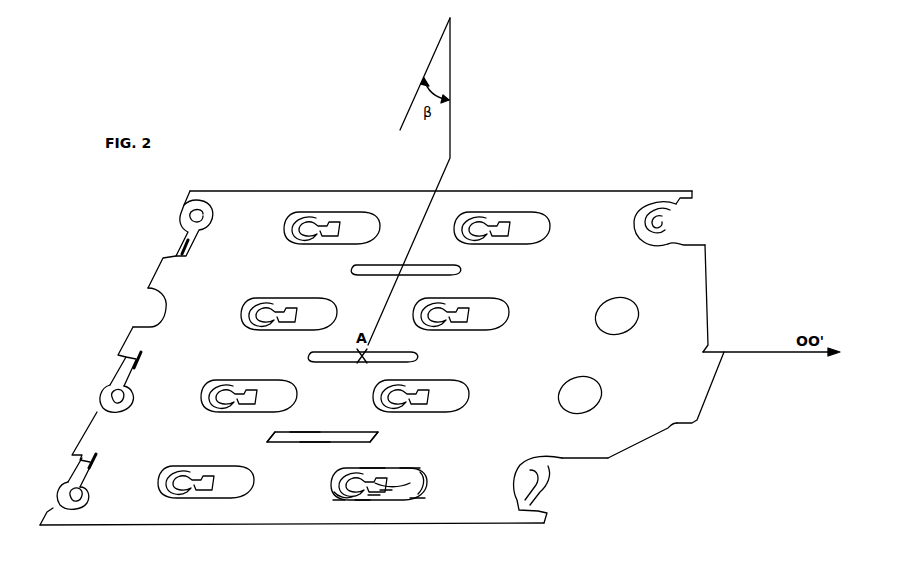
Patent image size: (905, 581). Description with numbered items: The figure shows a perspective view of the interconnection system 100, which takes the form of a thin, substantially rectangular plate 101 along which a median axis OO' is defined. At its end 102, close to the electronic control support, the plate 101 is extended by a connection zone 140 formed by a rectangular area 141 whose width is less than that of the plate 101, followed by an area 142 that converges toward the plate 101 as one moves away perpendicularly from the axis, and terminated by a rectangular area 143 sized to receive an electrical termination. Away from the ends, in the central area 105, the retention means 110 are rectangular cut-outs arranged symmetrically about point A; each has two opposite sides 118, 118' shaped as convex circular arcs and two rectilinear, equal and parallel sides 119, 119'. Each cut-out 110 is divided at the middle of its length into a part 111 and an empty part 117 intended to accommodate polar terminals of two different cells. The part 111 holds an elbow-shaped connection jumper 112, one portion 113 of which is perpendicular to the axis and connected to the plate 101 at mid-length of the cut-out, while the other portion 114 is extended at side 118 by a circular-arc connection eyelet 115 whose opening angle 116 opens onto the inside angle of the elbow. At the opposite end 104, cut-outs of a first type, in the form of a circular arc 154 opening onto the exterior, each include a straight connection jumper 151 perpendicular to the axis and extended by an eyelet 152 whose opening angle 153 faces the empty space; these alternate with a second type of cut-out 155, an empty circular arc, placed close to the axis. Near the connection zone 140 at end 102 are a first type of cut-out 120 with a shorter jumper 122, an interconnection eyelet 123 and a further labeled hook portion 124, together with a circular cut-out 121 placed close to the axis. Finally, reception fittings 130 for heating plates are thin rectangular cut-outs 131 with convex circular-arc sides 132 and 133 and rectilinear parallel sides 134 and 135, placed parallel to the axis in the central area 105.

The interconnection system 100 is at (247, 188).
The thin plate 101 is at (268, 207).
The end close to the electronic control support 102 is at (546, 520).
The opposite end 104 is at (152, 282).
The central area 105 is at (401, 318).
The retention means 110 is at (520, 212).
The part of cut-out including connection jumper 111 is at (348, 478).
The connection jumper 112 is at (385, 490).
The portion of jumper perpendicular to median axis 113 is at (405, 483).
The other portion of jumper 114 is at (373, 495).
The connection eyelet 115 is at (335, 500).
The opening angle 116 is at (368, 468).
The empty part of cut-out 117 is at (420, 500).
The convex circular-arc side 118 is at (318, 498).
The convex circular-arc side 118' is at (450, 464).
The rectilinear side 119 is at (350, 528).
The rectilinear side 119' is at (449, 426).
The first type of cut-out 120 is at (684, 222).
The circular cut-out 121 is at (619, 314).
The jumper 122 is at (698, 208).
The interconnection eyelet 123 is at (684, 253).
The hook portion 124 is at (638, 228).
The reception fittings 130 is at (100, 381).
The thin rectangular cut-out 131 is at (324, 432).
The convex circular-arc side 132 is at (380, 439).
The convex circular-arc side 133 is at (268, 437).
The slot upper edge 134 is at (300, 432).
The rectilinear side 135 is at (289, 444).
The connection zone 140 is at (698, 308).
The rectangular area 141 is at (588, 462).
The converging area 142 is at (652, 440).
The rectangular area 143 is at (716, 397).
The straight connection jumper 151 is at (116, 365).
The eyelet 152 is at (102, 393).
The opening angle 153 is at (128, 402).
The circular arc 154 is at (134, 394).
The second type of cut-out 155 is at (148, 309).